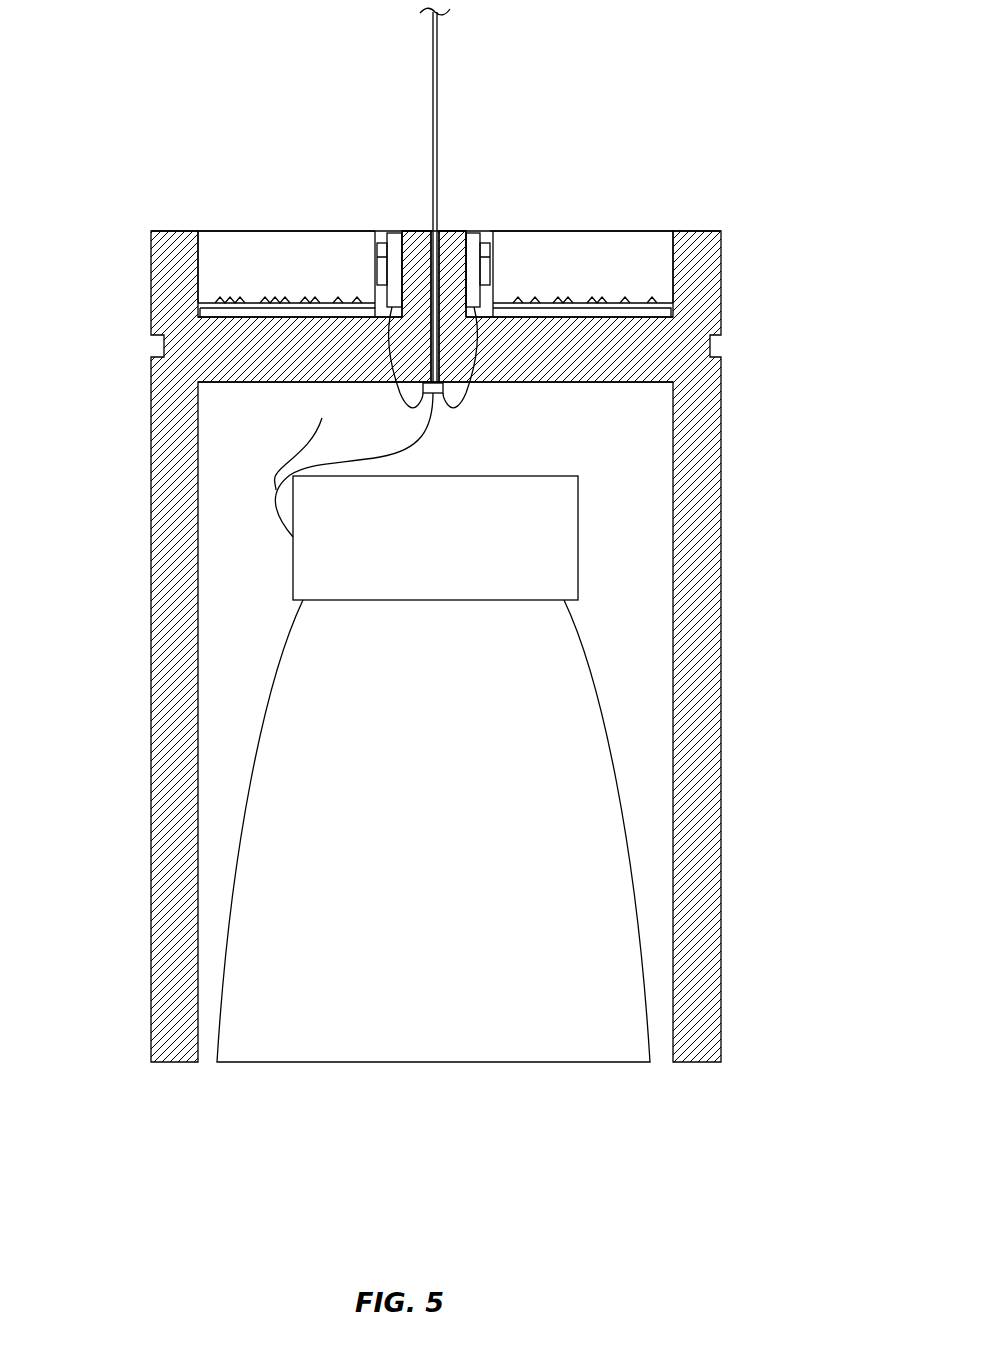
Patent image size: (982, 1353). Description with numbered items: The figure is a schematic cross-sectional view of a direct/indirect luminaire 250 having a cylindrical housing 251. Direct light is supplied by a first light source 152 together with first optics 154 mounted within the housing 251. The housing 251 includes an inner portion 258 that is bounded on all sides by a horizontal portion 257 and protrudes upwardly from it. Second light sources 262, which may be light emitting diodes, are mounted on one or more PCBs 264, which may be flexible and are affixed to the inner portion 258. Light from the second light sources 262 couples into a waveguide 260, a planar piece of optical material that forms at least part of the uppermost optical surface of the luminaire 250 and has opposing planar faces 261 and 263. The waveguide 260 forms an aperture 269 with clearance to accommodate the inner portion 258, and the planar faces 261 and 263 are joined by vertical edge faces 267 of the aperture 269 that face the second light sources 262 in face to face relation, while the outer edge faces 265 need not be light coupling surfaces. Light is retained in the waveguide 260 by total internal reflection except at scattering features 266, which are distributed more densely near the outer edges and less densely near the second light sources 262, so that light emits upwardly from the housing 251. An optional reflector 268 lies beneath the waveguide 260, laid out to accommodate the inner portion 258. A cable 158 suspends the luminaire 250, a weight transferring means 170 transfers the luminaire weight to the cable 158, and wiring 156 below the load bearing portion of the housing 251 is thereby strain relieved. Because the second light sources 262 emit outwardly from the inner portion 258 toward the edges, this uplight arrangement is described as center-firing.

The direct/indirect luminaire 250 is at (694, 50).
The housing 251 is at (151, 513).
The first light source 152 is at (578, 533).
The first optics 154 is at (646, 985).
The wiring 156 is at (395, 401).
The cable 158 is at (433, 97).
The weight transferring means 170 is at (445, 391).
The horizontal portion 257 is at (584, 362).
The inner portion 258 is at (418, 222).
The waveguide 260 is at (283, 242).
The planar face 261 is at (246, 223).
The second light source 262 is at (377, 243).
The planar face 263 is at (360, 292).
The PCB 264 is at (393, 247).
The outer edge face 265 is at (210, 250).
The scattering features 266 is at (288, 300).
The edge face 267 is at (370, 254).
The reflector 268 is at (210, 313).
The aperture 269 is at (497, 222).